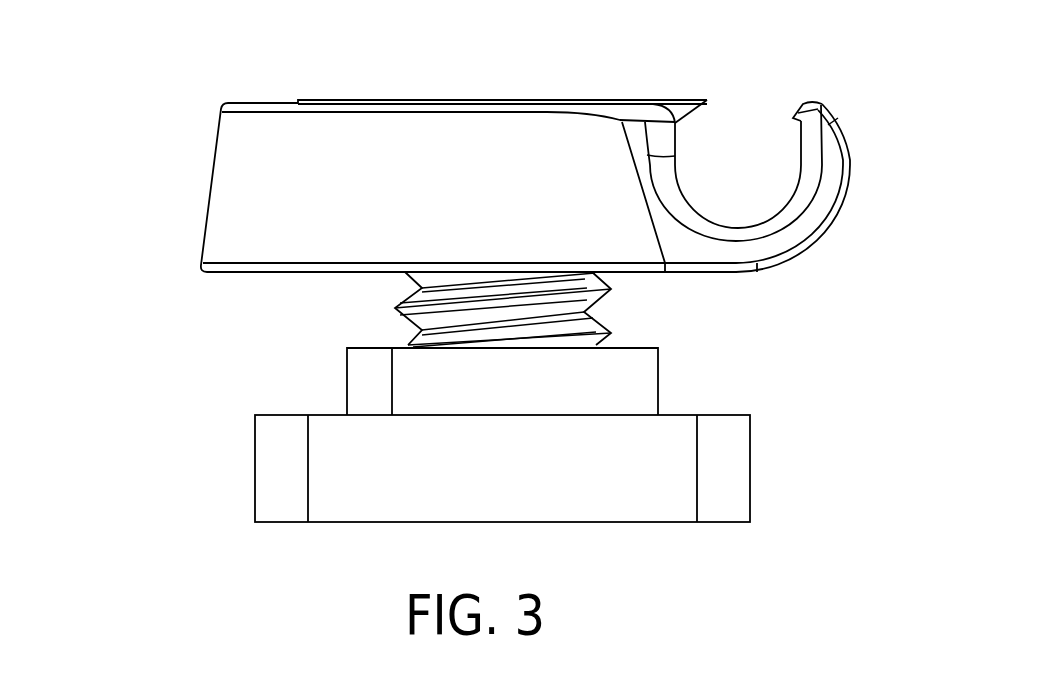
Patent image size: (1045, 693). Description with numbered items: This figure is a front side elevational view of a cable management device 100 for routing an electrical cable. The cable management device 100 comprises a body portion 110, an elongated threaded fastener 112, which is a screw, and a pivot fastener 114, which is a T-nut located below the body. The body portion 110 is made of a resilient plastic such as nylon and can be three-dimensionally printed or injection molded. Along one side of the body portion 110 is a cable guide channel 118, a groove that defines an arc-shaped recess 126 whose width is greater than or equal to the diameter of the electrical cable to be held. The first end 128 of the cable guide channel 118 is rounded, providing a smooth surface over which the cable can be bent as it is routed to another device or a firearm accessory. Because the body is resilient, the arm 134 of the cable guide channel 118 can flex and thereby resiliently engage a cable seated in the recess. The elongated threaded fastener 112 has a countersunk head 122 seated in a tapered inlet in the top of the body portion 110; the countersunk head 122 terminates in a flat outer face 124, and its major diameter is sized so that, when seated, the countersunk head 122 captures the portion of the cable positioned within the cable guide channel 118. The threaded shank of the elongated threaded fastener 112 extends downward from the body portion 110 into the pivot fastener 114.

The cable management device 100 is at (155, 100).
The body portion 110 is at (246, 158).
The elongated threaded fastener 112 is at (395, 308).
The pivot fastener 114 is at (277, 455).
The cable guide channel 118 is at (755, 100).
The countersunk head 122 is at (693, 112).
The flat outer face 124 is at (681, 101).
The arc-shaped recess 126 is at (762, 196).
The first end 128 is at (812, 170).
The arm 134 is at (842, 118).